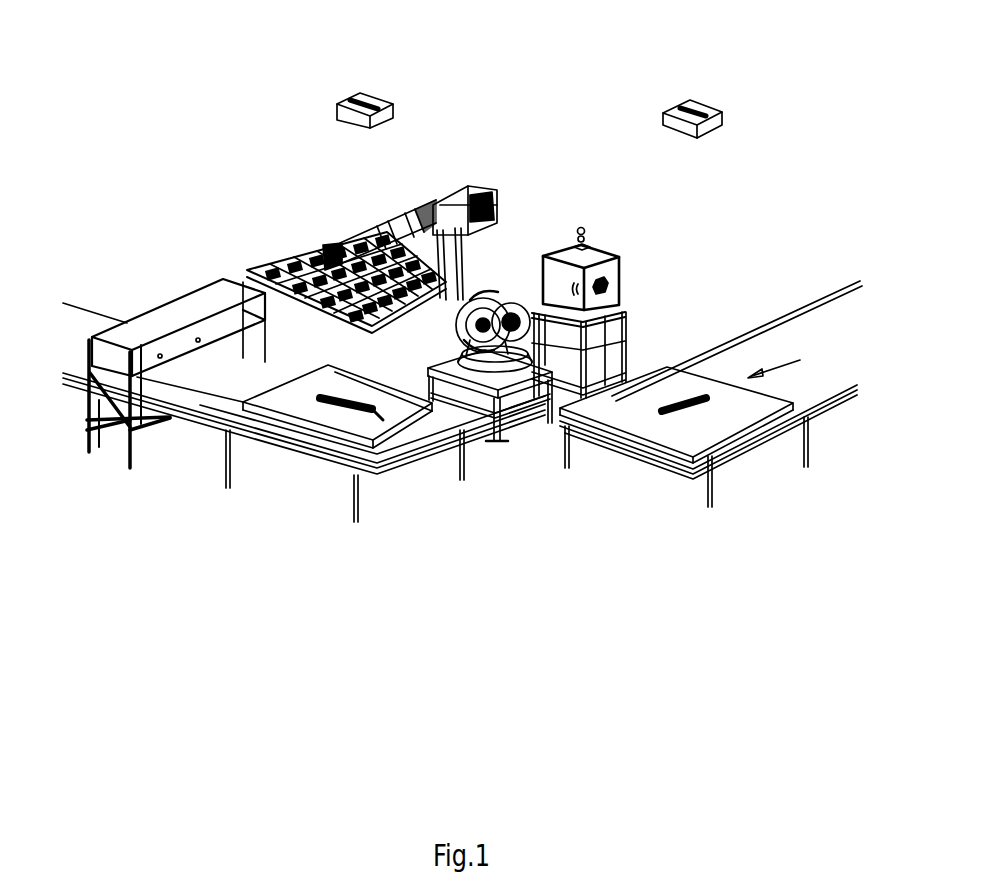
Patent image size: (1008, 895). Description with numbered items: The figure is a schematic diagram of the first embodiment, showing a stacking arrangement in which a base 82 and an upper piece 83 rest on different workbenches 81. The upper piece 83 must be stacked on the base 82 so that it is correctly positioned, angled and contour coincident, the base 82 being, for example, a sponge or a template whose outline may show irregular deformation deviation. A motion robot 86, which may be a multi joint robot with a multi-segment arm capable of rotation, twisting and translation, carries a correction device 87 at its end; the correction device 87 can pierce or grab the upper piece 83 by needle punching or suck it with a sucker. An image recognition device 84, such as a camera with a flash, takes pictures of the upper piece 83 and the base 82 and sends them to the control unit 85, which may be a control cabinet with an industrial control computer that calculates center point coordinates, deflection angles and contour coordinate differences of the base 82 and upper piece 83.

The workbench 81 is at (304, 447).
The base 82 is at (367, 446).
The upper piece 83 is at (682, 455).
The image recognition device 84 is at (337, 68).
The control unit 85 is at (643, 291).
The motion robot 86 is at (440, 267).
The correction device 87 is at (266, 298).